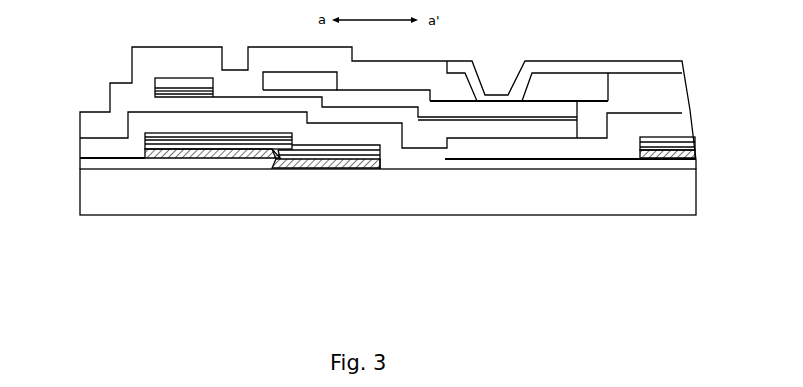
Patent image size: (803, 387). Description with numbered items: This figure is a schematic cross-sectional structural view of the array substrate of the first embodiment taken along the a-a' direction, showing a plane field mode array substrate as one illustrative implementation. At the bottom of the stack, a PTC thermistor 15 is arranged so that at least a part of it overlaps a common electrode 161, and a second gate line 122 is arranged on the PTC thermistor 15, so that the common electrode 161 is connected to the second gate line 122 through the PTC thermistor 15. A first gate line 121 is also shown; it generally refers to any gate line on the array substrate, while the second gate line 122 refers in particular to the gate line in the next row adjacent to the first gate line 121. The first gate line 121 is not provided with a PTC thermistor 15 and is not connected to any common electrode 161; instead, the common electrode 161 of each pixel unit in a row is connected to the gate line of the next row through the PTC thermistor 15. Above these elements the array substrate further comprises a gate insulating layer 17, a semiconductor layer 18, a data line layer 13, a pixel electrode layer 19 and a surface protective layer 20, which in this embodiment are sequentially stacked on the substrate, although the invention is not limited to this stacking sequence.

The surface protective layer 20 is at (293, 53).
The pixel electrode layer 19 is at (527, 68).
The data line layer 13 is at (165, 82).
The semiconductor layer 18 is at (158, 107).
The gate insulating layer 17 is at (92, 148).
The common electrode 161 is at (113, 163).
The first gate line 121 is at (222, 140).
The PTC thermistor 15 is at (287, 169).
The second gate line 122 is at (670, 147).